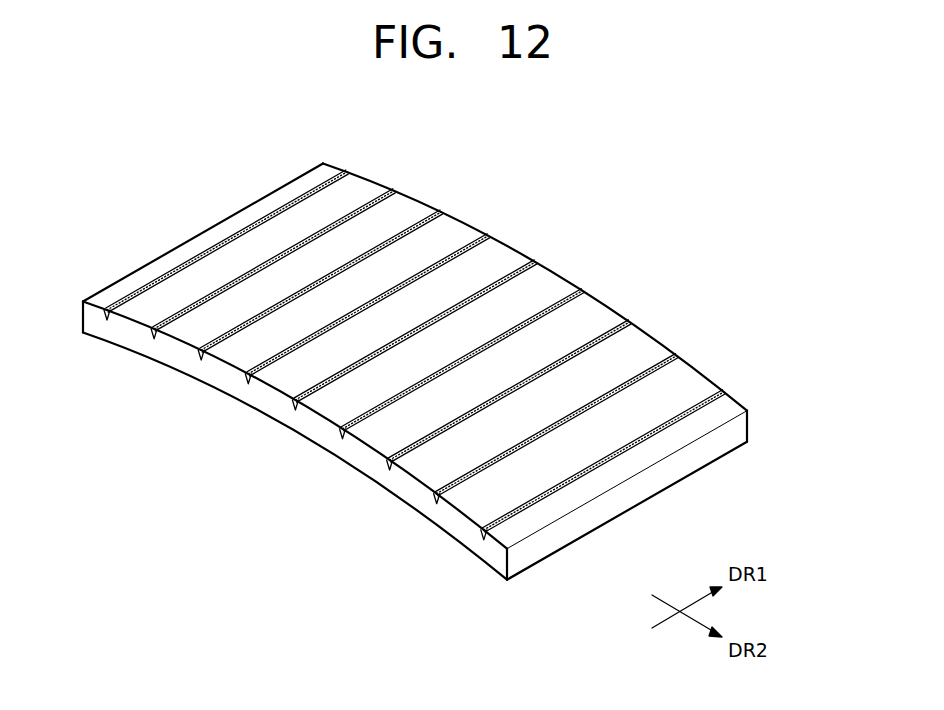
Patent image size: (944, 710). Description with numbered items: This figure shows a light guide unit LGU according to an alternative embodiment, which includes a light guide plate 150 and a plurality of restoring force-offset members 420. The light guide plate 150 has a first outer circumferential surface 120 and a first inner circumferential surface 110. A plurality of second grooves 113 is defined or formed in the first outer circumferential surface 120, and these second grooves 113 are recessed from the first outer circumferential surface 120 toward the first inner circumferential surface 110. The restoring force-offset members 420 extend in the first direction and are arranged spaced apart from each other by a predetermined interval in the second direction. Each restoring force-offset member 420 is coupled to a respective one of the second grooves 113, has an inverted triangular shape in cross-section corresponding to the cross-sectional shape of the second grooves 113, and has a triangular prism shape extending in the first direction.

The light guide unit LGU is at (648, 220).
The first inner circumferential surface 110 is at (383, 488).
The second grooves 113 is at (708, 399).
The first outer circumferential surface 120 is at (485, 509).
The light guide plate 150 is at (754, 422).
The restoring force-offset member 420 is at (663, 362).